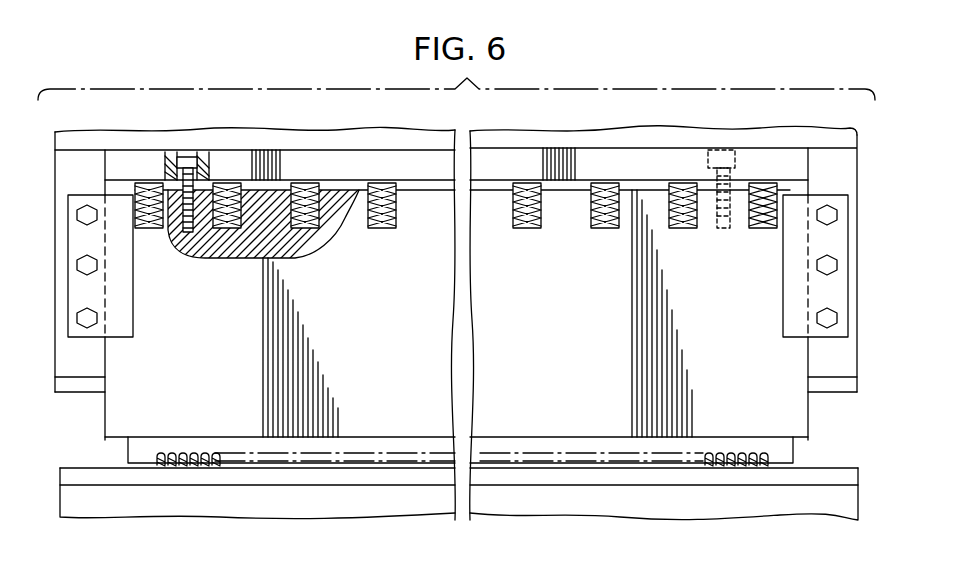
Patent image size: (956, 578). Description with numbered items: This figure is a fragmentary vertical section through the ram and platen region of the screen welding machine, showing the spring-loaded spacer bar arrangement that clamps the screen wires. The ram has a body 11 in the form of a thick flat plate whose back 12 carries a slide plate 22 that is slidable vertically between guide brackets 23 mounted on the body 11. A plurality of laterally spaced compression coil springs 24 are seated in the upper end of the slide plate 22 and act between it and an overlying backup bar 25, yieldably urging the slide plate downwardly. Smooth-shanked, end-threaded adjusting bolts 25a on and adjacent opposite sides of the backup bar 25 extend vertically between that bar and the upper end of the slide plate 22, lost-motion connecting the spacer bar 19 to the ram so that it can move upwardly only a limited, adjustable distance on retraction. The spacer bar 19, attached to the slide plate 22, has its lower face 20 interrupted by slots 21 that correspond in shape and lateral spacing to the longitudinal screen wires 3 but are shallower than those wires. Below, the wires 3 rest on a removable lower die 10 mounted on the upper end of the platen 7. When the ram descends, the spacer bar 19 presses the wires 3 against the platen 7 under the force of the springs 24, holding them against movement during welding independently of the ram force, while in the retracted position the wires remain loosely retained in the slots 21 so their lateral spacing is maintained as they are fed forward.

The body 11 is at (550, 128).
The back 12 is at (657, 144).
The backup bar 25 is at (778, 172).
The adjusting bolts 25a is at (193, 152).
The compression coil springs 24 is at (380, 180).
The guide brackets 23 is at (133, 290).
The slide plate 22 is at (414, 318).
The spacer bar 19 is at (128, 450).
The slots 21 is at (203, 456).
The longitudinal wires 3 is at (188, 468).
The lower face 20 is at (147, 468).
The platen 7 is at (325, 506).
The lower die 10 is at (357, 475).